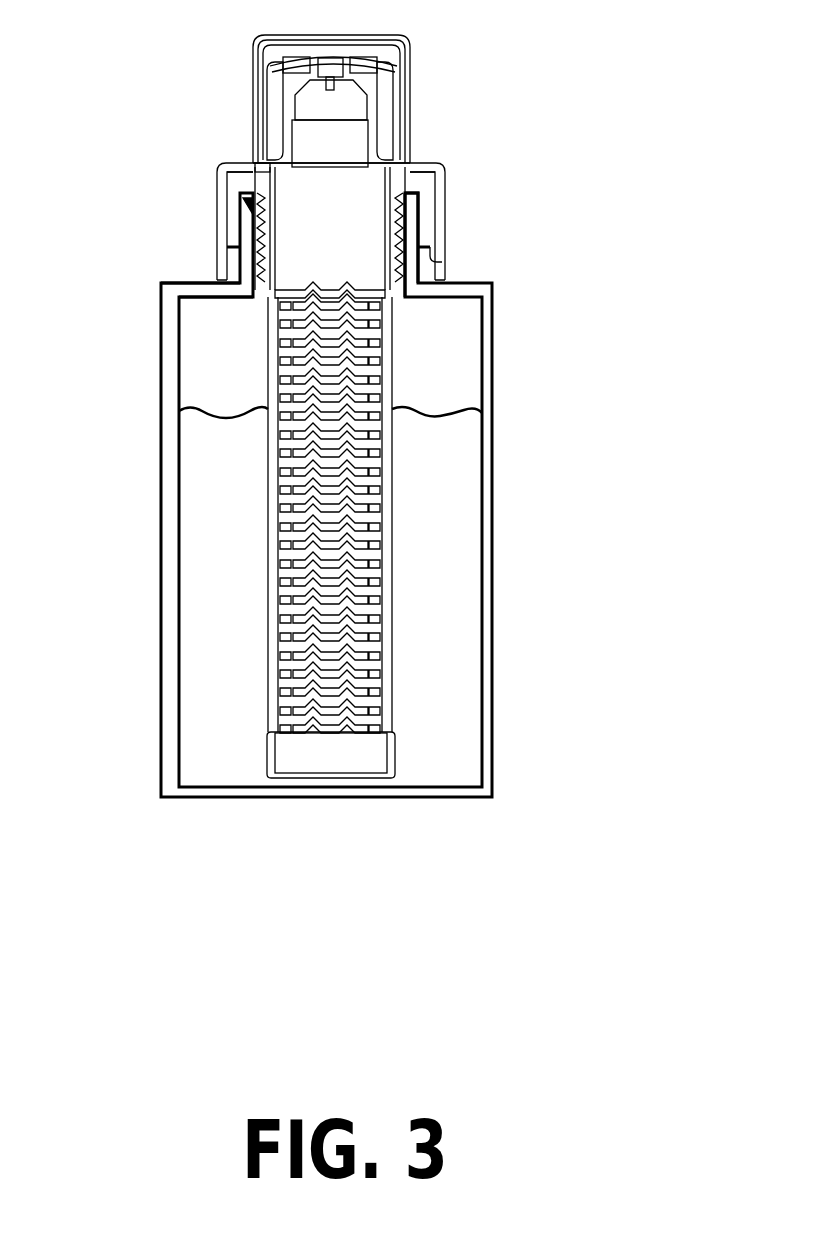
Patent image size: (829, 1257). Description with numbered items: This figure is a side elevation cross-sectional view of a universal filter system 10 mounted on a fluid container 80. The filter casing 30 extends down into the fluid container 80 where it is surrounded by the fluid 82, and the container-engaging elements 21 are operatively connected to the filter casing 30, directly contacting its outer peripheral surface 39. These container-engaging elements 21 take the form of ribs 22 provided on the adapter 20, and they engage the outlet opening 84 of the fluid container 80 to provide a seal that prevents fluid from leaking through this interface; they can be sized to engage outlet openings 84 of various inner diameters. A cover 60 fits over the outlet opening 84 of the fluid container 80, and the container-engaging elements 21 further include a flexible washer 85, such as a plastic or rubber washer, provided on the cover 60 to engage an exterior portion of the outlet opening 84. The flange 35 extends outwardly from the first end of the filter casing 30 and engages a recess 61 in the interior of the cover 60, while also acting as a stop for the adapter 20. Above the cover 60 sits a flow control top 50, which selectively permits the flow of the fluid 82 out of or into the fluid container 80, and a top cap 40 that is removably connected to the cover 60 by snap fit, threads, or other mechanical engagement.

The universal filter system 10 is at (502, 130).
The adapter 20 is at (272, 229).
The container-engaging elements 21 is at (246, 206).
The ribs 22 is at (259, 222).
The filter casing 30 is at (412, 697).
The flange 35 is at (265, 166).
The outer peripheral surface 39 is at (255, 290).
The top cap 40 is at (255, 58).
The flow control top 50 is at (368, 92).
The cover 60 is at (217, 175).
The recess 61 is at (262, 168).
The fluid container 80 is at (492, 305).
The fluid 82 is at (433, 488).
The outlet opening 84 is at (412, 228).
The flexible washer 85 is at (442, 260).